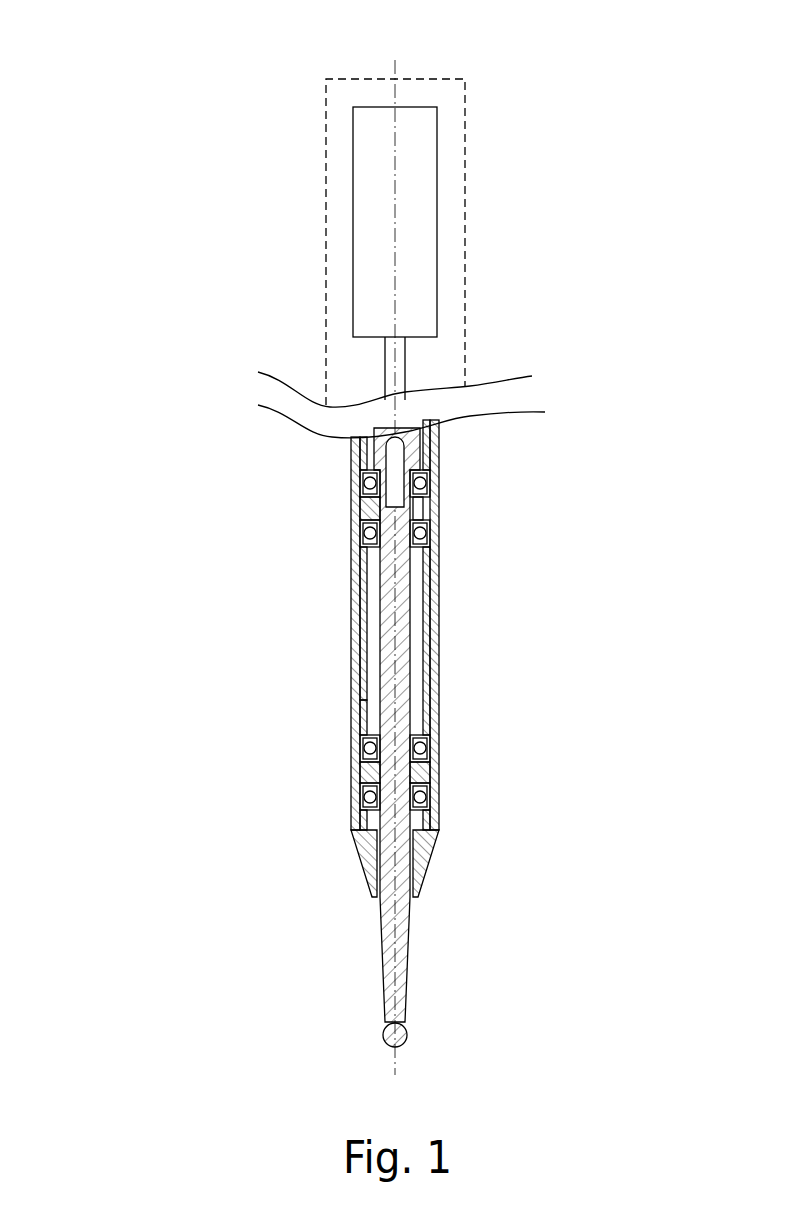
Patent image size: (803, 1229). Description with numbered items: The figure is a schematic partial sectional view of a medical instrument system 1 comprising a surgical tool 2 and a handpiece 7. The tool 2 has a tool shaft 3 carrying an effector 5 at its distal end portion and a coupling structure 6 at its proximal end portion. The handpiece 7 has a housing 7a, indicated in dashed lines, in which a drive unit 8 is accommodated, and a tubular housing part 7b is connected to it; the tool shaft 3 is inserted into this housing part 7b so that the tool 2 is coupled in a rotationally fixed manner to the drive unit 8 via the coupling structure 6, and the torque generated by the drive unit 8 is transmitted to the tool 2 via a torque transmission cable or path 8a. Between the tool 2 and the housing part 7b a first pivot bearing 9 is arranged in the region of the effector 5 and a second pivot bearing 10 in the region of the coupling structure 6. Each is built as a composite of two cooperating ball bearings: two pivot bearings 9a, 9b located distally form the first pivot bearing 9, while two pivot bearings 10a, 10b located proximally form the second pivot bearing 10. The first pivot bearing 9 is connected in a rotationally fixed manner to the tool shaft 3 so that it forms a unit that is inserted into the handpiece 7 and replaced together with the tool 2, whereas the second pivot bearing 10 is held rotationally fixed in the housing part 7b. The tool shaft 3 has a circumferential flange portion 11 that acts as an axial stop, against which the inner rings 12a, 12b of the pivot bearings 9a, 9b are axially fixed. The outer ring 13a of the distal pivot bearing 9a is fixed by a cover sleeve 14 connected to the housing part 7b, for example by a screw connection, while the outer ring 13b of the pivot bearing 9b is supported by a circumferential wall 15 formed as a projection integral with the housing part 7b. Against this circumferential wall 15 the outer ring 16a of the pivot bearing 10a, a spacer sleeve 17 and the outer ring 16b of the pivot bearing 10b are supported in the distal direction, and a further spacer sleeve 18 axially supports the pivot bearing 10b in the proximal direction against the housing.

The medical instrument system 1 is at (160, 55).
The surgical tool 2 is at (441, 757).
The tool shaft 3 is at (441, 757).
The effector 5 is at (398, 1036).
The coupling structure 6 is at (396, 462).
The handpiece 7 is at (584, 144).
The housing 7a is at (465, 268).
The tubular housing part 7b is at (440, 660).
The drive unit 8 is at (395, 178).
The torque transmission path 8a is at (400, 358).
The first pivot bearing 9 is at (480, 774).
The pivot bearing 9a is at (464, 799).
The pivot bearing 9b is at (428, 750).
The second pivot bearing 10 is at (485, 510).
The pivot bearing 10a is at (428, 533).
The pivot bearing 10b is at (428, 483).
The flange portion 11 is at (375, 772).
The inner ring 12a is at (366, 818).
The inner ring 12b is at (365, 732).
The outer ring 13a is at (362, 793).
The outer ring 13b is at (362, 752).
The cover sleeve 14 is at (366, 860).
The circumferential wall 15 is at (425, 620).
The outer ring 16a is at (362, 532).
The outer ring 16b is at (362, 485).
The spacer sleeve 17 is at (358, 508).
The spacer sleeve 18 is at (355, 458).